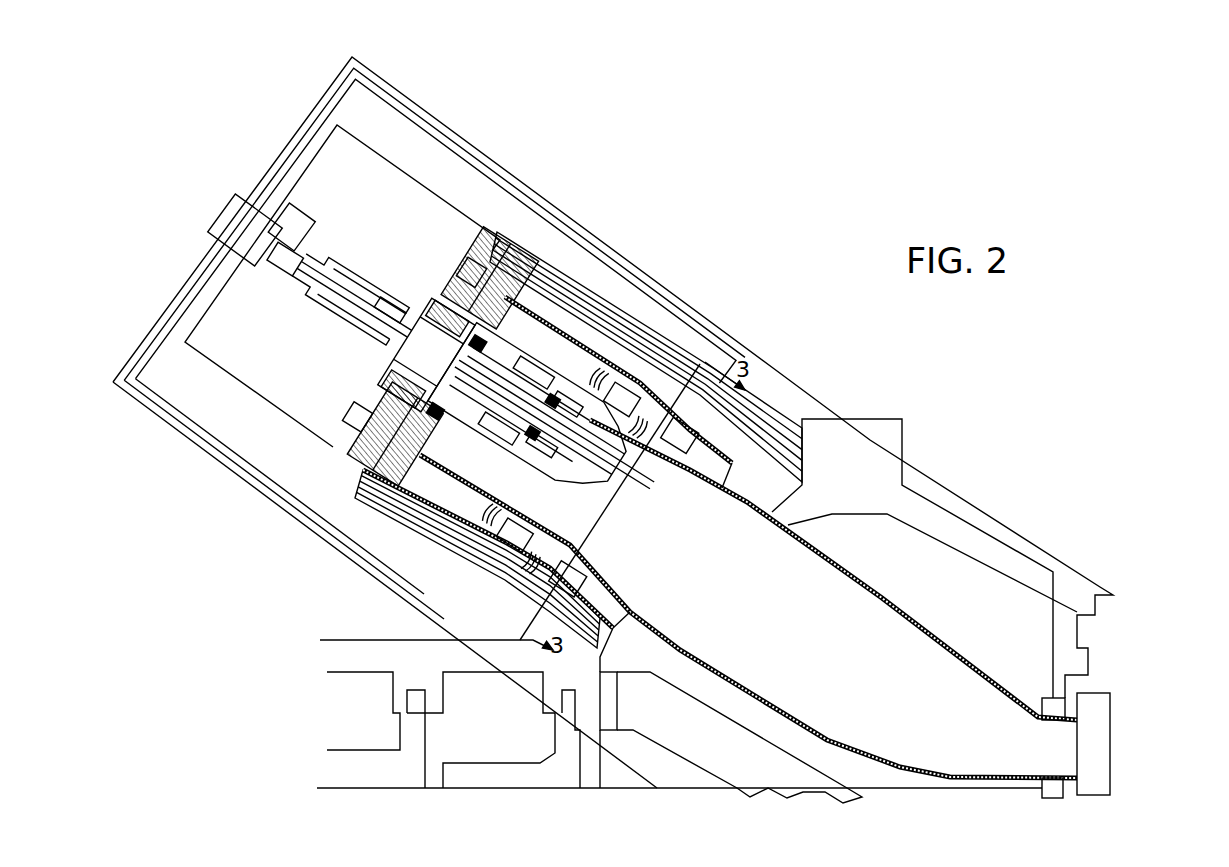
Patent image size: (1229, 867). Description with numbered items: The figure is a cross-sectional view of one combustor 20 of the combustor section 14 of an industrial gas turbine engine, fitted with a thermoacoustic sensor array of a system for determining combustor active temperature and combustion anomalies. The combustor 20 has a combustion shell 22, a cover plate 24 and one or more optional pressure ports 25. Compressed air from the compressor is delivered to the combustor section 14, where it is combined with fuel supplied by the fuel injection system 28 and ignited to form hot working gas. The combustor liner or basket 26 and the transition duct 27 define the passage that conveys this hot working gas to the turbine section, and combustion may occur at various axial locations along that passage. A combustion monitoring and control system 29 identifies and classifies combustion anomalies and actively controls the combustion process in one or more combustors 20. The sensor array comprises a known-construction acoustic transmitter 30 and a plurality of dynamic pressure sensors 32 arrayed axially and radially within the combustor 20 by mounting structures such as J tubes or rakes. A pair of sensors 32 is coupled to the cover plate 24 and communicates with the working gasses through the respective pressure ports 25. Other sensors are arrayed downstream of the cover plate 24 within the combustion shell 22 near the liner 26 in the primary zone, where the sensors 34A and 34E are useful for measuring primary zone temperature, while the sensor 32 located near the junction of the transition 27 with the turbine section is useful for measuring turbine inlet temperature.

The combustor section 14 is at (1003, 492).
The combustor 20 is at (262, 90).
The combustion shell 22 is at (643, 357).
The cover plate 24 is at (508, 258).
The pressure ports 25 is at (535, 318).
The combustor liner or basket 26 is at (687, 442).
The transition duct 27 is at (905, 722).
The fuel injection system 28 is at (430, 300).
The combustion monitoring and control system 29 is at (178, 200).
The acoustic transmitter 30 is at (635, 392).
The dynamic pressure sensors 32 is at (468, 262).
The sensor 34A is at (733, 430).
The sensor 34E is at (578, 585).